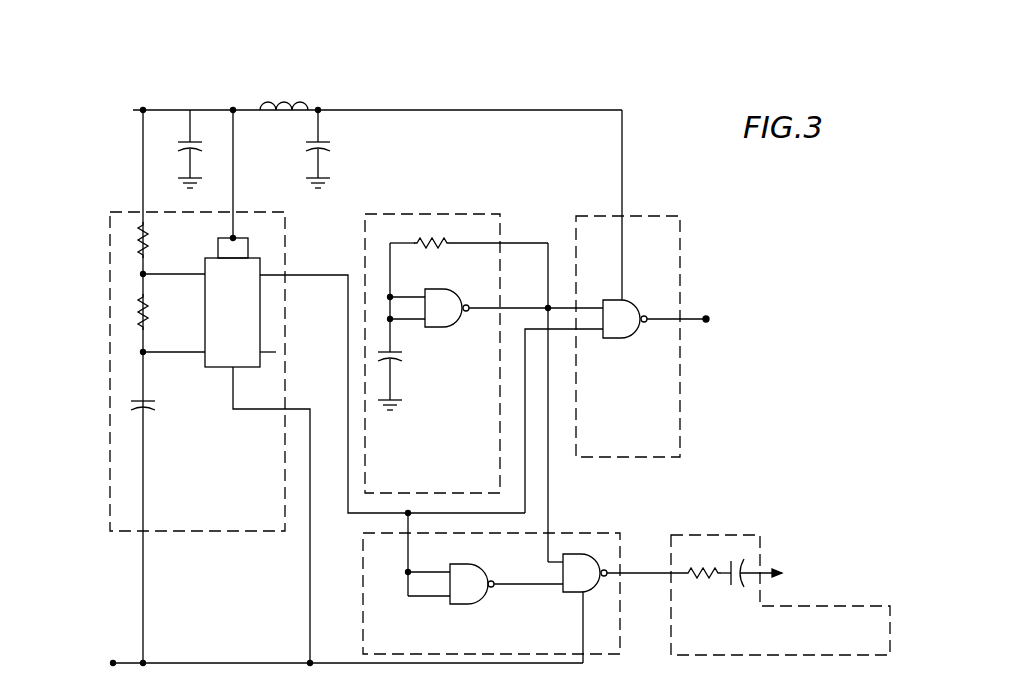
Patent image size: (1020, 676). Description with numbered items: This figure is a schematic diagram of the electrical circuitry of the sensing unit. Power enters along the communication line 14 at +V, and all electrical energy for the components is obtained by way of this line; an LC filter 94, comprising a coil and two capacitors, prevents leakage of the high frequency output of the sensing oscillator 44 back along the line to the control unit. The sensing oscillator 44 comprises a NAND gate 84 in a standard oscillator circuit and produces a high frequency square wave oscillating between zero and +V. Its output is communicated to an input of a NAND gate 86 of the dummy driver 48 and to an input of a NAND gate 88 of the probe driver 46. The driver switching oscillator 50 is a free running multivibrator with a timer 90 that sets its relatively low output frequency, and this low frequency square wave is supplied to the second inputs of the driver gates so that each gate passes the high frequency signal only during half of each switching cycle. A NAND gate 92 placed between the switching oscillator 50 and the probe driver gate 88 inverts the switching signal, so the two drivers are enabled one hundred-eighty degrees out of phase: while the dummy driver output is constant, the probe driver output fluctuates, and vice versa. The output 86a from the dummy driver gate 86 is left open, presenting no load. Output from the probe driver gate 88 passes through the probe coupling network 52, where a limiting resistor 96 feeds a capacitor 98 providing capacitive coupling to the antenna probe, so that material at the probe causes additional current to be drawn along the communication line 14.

The communication line 14 is at (175, 108).
The LC filter 94 is at (292, 96).
The timer 90 is at (205, 317).
The driver switching oscillator 50 is at (317, 437).
The sensing oscillator 44 is at (484, 335).
The NAND gate 84 is at (440, 327).
The NAND gate 86 is at (622, 338).
The output 86a is at (663, 311).
The dummy driver 48 is at (655, 336).
The probe driver 46 is at (472, 587).
The NAND gate 92 is at (468, 564).
The NAND gate 88 is at (572, 592).
The limiting resistor 96 is at (697, 561).
The capacitor 98 is at (728, 561).
The probe coupling network 52 is at (778, 576).